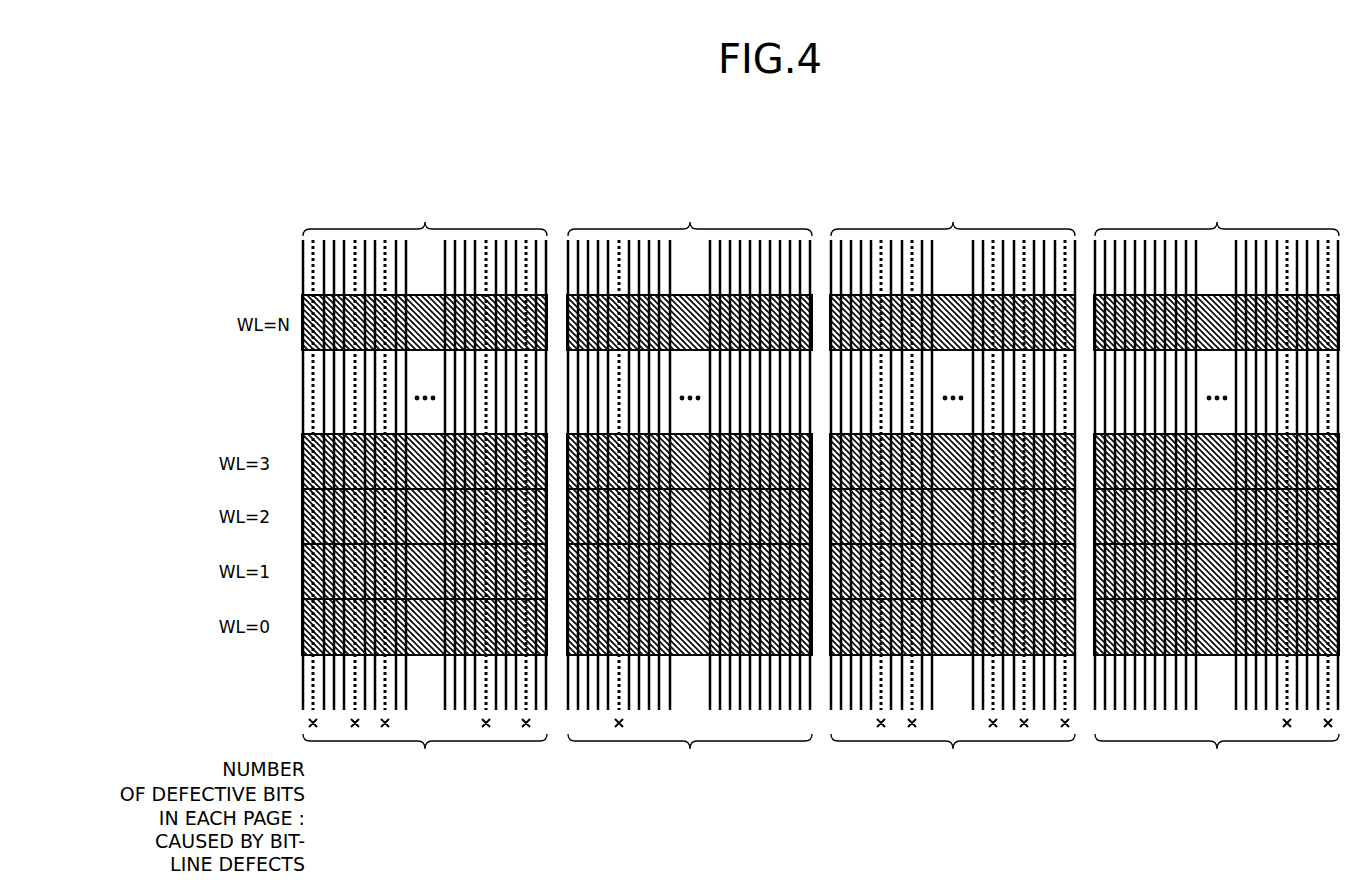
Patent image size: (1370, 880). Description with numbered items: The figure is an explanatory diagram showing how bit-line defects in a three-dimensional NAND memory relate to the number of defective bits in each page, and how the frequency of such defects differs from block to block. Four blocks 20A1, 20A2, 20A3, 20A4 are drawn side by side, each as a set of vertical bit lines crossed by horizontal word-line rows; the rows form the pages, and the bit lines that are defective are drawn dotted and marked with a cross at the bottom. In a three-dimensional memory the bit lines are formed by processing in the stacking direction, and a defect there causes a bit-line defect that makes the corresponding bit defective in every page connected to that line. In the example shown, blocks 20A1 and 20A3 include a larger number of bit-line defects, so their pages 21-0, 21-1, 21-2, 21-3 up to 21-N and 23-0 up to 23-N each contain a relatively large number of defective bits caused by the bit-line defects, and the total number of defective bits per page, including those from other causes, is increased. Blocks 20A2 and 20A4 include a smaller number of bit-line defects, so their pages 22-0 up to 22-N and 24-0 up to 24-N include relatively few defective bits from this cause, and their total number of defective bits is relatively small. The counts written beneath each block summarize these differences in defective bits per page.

The block 20A1 is at (333, 179).
The block 20A2 is at (598, 179).
The block 20A3 is at (860, 179).
The block 20A4 is at (1124, 179).
The page 21-N is at (292, 333).
The page 21-3 is at (292, 472).
The page 21-2 is at (292, 527).
The page 21-1 is at (292, 582).
The page 21-0 is at (292, 637).
The page 22-N is at (552, 295).
The page 22-0 is at (553, 641).
The page 23-N is at (815, 295).
The page 23-0 is at (816, 641).
The page 24-N is at (1079, 295).
The page 24-0 is at (1080, 641).